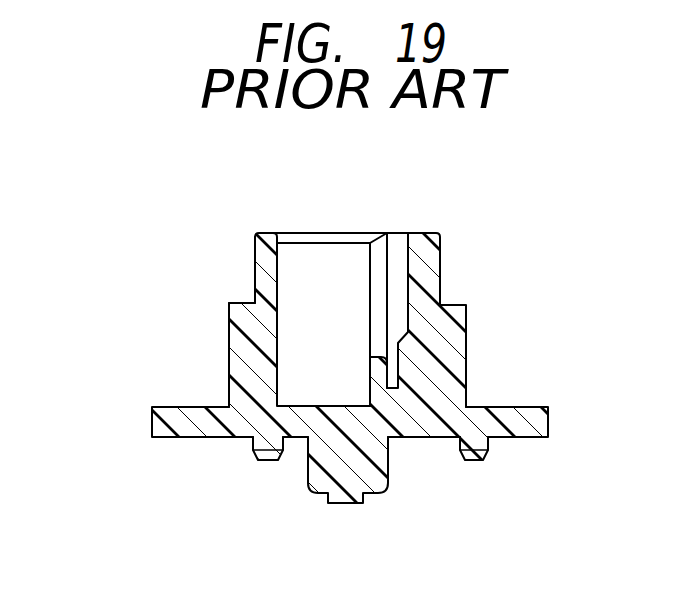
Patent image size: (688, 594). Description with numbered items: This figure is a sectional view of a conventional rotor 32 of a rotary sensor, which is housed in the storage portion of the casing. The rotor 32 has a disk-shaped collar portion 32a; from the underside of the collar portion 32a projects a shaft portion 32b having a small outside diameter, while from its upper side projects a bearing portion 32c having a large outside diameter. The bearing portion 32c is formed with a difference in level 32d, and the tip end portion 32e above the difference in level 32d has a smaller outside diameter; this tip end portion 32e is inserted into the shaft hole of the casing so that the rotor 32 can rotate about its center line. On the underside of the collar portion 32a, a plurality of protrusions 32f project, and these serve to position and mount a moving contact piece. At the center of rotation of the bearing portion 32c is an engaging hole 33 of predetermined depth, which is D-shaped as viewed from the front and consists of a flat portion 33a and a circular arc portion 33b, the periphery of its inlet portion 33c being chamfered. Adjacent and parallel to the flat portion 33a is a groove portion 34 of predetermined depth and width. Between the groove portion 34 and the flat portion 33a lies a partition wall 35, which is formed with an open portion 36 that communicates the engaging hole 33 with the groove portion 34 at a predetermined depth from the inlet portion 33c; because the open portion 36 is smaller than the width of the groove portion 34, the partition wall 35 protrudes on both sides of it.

The rotor 32 is at (190, 460).
The collar portion 32a is at (150, 423).
The shaft portion 32b is at (308, 482).
The bearing portion 32c is at (229, 347).
The difference in level 32d is at (240, 302).
The tip end portion 32e is at (254, 254).
The protrusions 32f is at (267, 459).
The engaging hole 33 is at (300, 274).
The flat portion 33a is at (371, 275).
The circular arc portion 33b is at (273, 234).
The inlet portion 33c is at (306, 241).
The groove portion 34 is at (400, 292).
The partition wall 35 is at (378, 377).
The open portion 36 is at (380, 252).